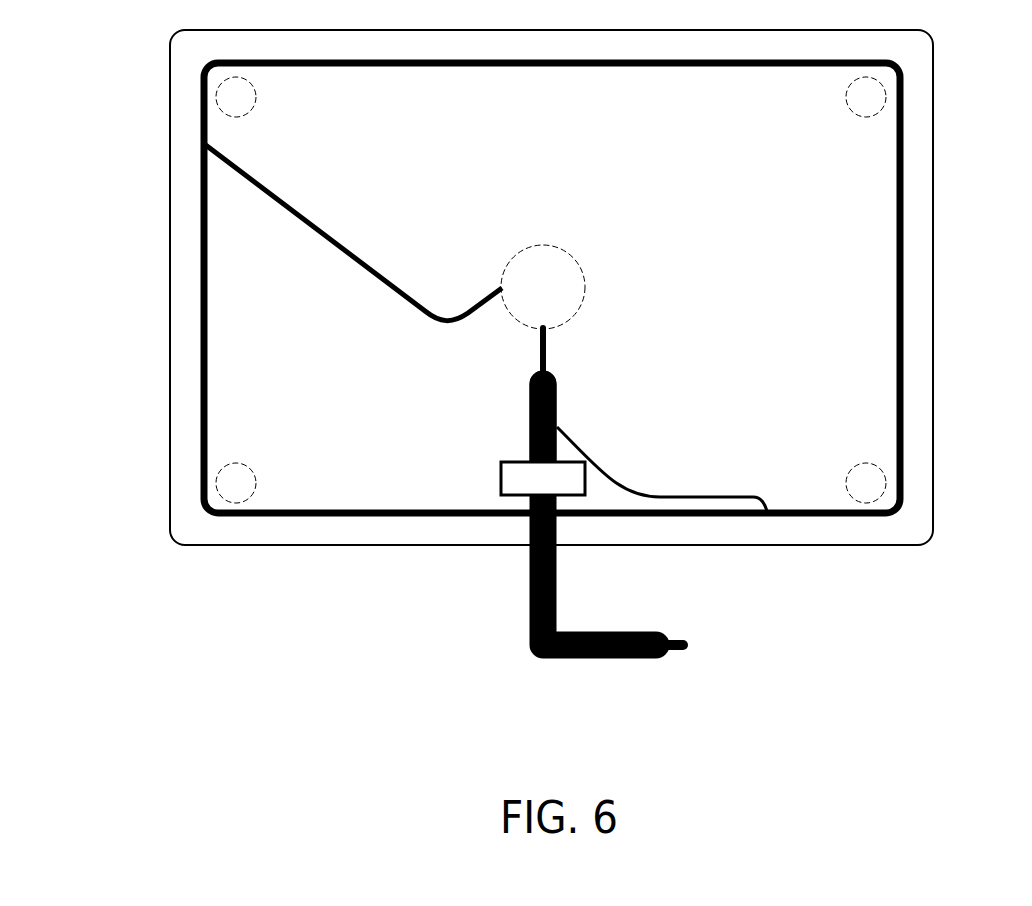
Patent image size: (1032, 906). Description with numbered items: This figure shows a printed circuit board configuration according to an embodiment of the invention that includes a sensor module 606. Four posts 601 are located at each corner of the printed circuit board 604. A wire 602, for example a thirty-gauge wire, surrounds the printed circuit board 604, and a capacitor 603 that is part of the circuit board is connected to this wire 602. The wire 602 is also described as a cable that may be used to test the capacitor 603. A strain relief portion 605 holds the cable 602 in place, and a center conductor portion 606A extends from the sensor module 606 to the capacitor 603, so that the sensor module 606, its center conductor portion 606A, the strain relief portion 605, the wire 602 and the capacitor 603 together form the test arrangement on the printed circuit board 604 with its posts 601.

The posts 601 is at (220, 100).
The wire 602 is at (200, 320).
The capacitor 603 is at (562, 263).
The printed circuit board 604 is at (833, 385).
The strain relief portion 605 is at (501, 472).
The sensor module 606 is at (530, 603).
The center conductor portion 606A is at (547, 338).